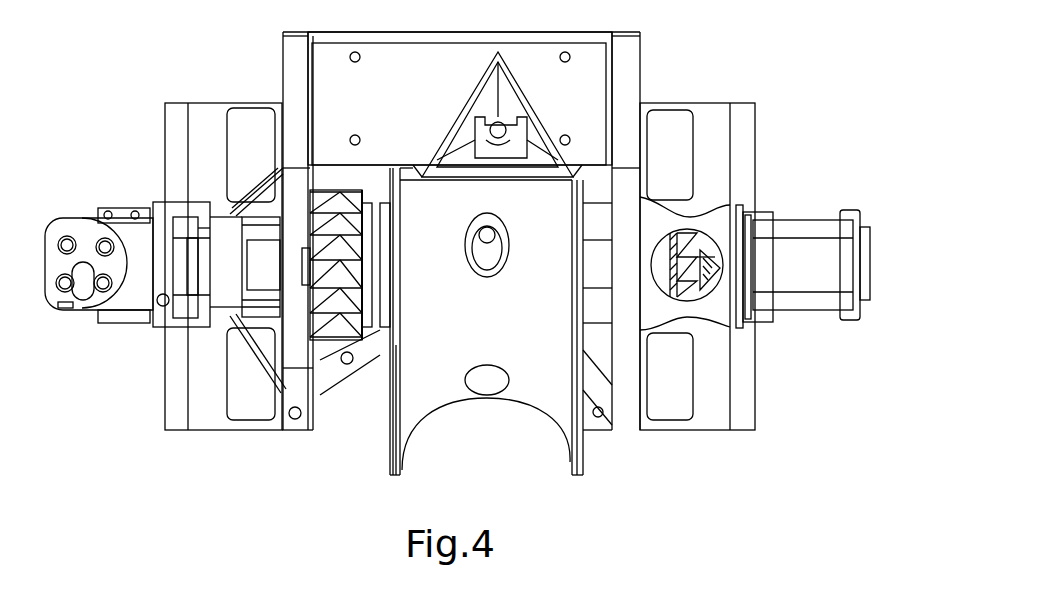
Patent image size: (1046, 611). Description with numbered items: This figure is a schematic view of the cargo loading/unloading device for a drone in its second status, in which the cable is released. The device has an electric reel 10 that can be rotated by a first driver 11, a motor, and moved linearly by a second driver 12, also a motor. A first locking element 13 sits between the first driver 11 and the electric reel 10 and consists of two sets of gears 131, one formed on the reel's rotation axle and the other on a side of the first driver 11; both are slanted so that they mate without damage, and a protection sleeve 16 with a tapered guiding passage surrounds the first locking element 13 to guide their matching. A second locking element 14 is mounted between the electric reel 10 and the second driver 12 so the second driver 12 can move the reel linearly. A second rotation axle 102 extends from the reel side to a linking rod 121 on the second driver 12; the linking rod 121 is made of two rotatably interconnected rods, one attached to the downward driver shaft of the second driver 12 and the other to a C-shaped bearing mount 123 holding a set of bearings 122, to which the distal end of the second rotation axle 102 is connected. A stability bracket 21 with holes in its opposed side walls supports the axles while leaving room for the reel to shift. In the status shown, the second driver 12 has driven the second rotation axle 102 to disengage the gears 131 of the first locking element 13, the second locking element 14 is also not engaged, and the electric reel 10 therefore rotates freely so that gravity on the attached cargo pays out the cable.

The electric reel 10 is at (568, 430).
The first driver 11 is at (797, 255).
The second driver 12 is at (99, 276).
The first locking element 13 is at (733, 351).
The second locking element 14 is at (348, 297).
The protection sleeve 16 is at (712, 227).
The stability bracket 21 is at (623, 63).
The second rotation axle 102 is at (262, 255).
The linking rod 121 is at (128, 300).
The bearings 122 is at (212, 283).
The bearing mount 123 is at (152, 285).
The gears 131 is at (700, 273).